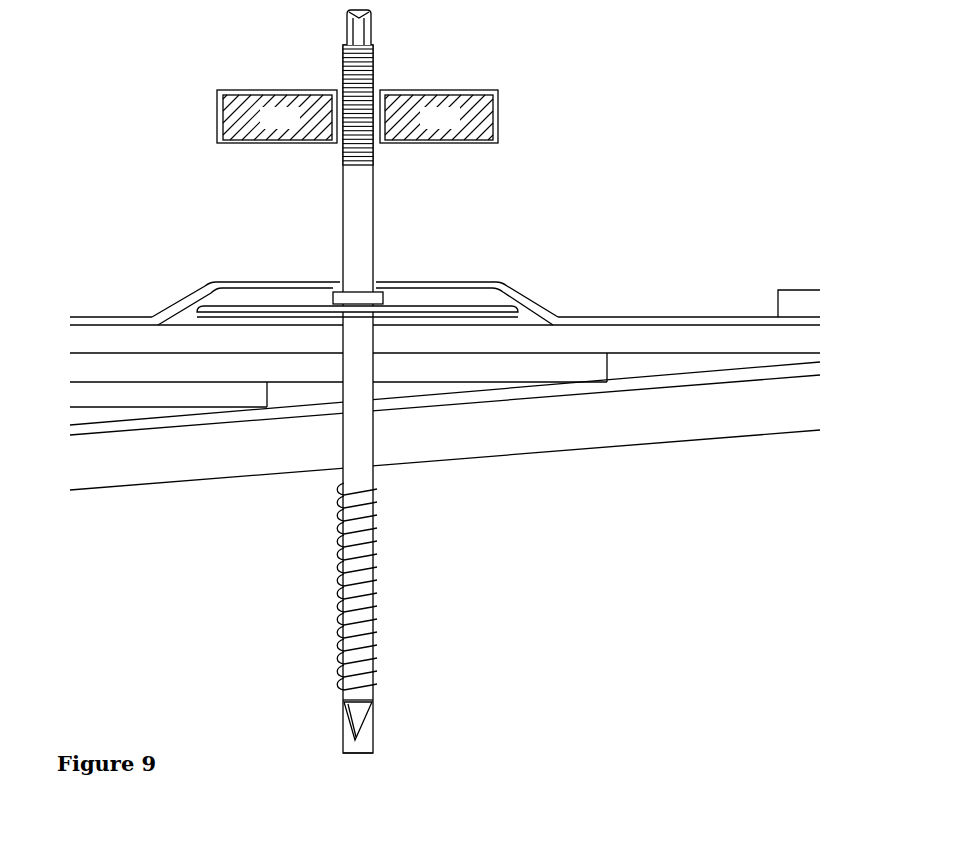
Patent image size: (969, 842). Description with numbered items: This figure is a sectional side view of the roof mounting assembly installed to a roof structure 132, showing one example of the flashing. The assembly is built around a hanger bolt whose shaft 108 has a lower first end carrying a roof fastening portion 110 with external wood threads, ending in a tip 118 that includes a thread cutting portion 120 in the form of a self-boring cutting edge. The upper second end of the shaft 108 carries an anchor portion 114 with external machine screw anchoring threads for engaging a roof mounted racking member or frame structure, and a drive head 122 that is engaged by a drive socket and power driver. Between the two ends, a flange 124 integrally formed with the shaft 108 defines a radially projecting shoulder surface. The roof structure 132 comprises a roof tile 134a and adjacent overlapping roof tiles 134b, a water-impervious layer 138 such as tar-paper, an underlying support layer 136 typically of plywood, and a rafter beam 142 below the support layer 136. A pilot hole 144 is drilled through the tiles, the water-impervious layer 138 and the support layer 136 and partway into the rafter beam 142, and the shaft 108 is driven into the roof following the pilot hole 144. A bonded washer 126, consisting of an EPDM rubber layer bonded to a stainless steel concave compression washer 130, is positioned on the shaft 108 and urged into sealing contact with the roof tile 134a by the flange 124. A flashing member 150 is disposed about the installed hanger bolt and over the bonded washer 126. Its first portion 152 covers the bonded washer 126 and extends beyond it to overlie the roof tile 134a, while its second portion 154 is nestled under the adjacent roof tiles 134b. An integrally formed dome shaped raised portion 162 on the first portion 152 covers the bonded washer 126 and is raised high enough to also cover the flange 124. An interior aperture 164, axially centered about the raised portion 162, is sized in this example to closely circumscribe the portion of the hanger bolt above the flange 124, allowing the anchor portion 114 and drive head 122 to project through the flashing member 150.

The shaft 108 is at (374, 478).
The roof fastening portion 110 is at (377, 567).
The anchor portion 114 is at (374, 83).
The tip 118 is at (369, 706).
The thread cutting portion 120 is at (358, 725).
The drive head 122 is at (372, 30).
The flange 124 is at (389, 292).
The bonded washer 126 is at (263, 305).
The concave compression washer 130 is at (441, 304).
The roof structure 132 is at (577, 281).
The roof tile 134a is at (80, 356).
The roof tiles 134b is at (795, 289).
The support layer 136 is at (212, 450).
The water-impervious layer 138 is at (137, 422).
The rafter beam 142 is at (203, 669).
The pilot hole 144 is at (363, 745).
The flashing member 150 is at (90, 316).
The first portion 152 is at (619, 316).
The second portion 154 is at (797, 327).
The raised portion 162 is at (190, 292).
The aperture 164 is at (340, 280).